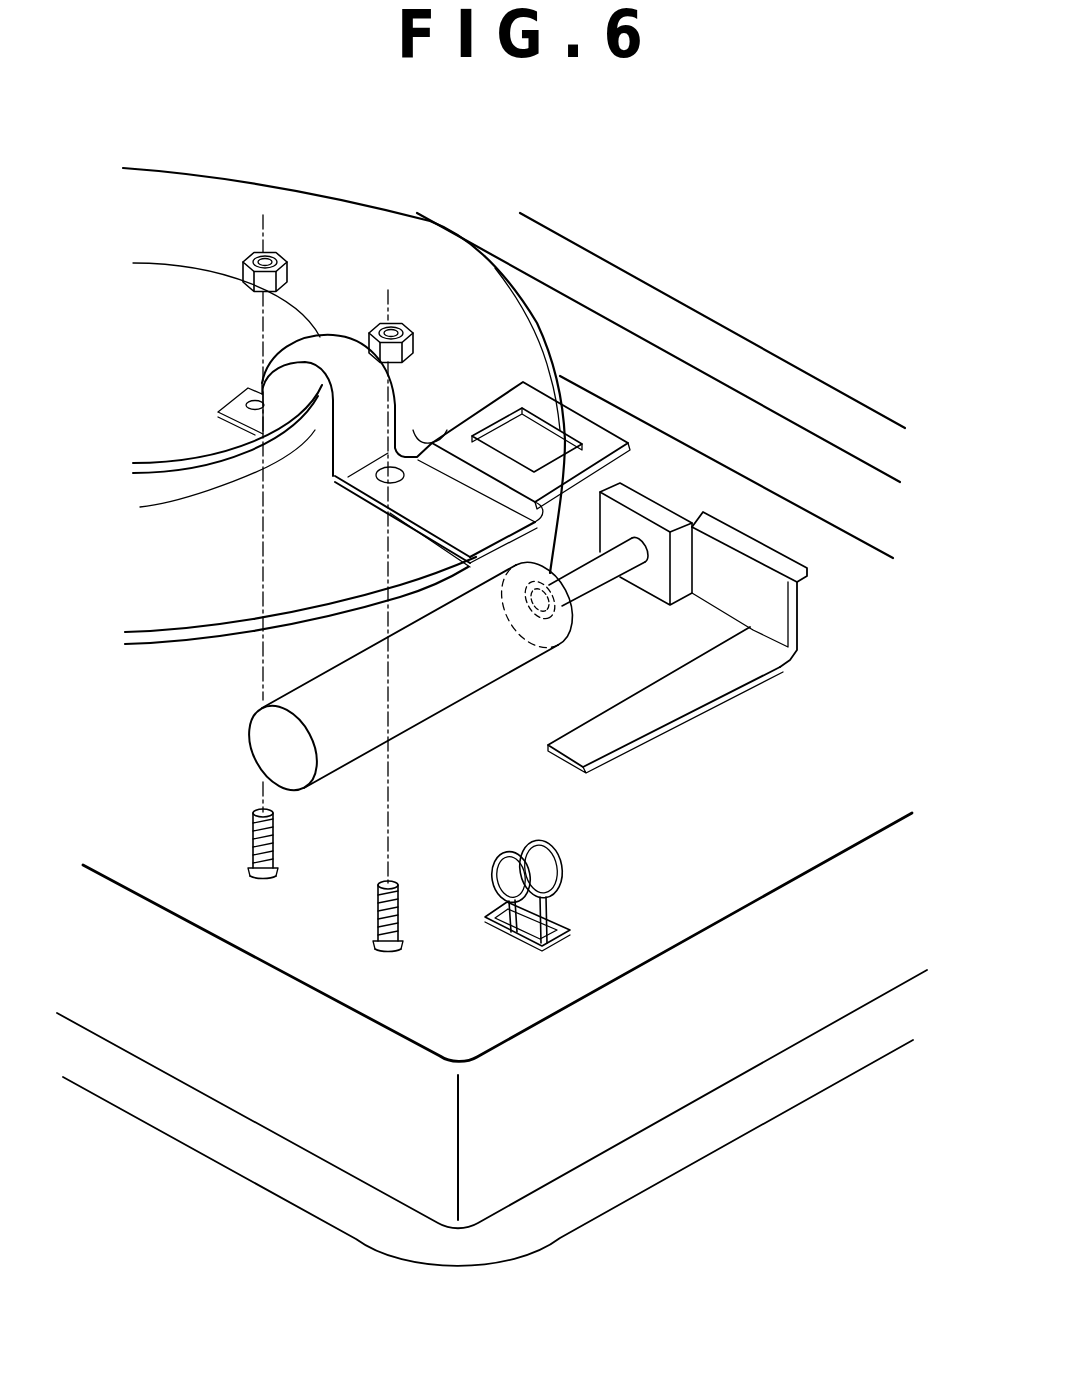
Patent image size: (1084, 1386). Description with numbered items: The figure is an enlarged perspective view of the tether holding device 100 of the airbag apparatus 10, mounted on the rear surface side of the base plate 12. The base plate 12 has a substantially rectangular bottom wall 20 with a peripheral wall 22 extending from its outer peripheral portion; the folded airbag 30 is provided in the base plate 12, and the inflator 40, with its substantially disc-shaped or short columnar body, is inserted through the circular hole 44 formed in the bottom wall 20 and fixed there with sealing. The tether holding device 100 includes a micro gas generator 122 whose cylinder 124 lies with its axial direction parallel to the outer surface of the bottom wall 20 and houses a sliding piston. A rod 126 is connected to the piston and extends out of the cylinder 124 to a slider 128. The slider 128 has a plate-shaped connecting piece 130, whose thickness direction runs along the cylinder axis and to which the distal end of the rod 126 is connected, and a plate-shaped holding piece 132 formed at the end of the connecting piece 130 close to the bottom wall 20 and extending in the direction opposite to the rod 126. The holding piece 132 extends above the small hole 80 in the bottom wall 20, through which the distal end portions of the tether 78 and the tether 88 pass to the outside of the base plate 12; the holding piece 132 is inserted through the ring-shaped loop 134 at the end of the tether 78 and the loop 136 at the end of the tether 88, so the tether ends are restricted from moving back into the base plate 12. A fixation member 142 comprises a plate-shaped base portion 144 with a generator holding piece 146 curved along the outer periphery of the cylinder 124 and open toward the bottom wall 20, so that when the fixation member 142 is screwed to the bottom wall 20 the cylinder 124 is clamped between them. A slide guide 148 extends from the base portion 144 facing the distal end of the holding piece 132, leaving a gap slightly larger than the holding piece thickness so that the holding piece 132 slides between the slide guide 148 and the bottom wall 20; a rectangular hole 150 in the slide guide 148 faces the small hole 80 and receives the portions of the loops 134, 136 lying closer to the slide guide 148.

The airbag apparatus 10 is at (742, 290).
The base plate 12 is at (744, 890).
The bottom wall 20 is at (493, 1027).
The peripheral wall 22 is at (373, 1165).
The airbag 30 is at (263, 1160).
The inflator 40 is at (432, 255).
The circular hole 44 is at (250, 750).
The tether 78 is at (567, 869).
The small hole 80 is at (563, 921).
The tether 88 is at (497, 852).
The tether holding device 100 is at (822, 676).
The micro gas generator 122 is at (412, 713).
The cylinder 124 is at (336, 763).
The rod 126 is at (593, 583).
The slider 128 is at (806, 611).
The connecting piece 130 is at (663, 492).
The holding piece 132 is at (685, 697).
The loop 134 is at (548, 843).
The loop 136 is at (493, 875).
The fixation member 142 is at (581, 403).
The base portion 144 is at (447, 492).
The generator holding piece 146 is at (340, 348).
The slide guide 148 is at (593, 432).
The rectangular hole 150 is at (510, 412).